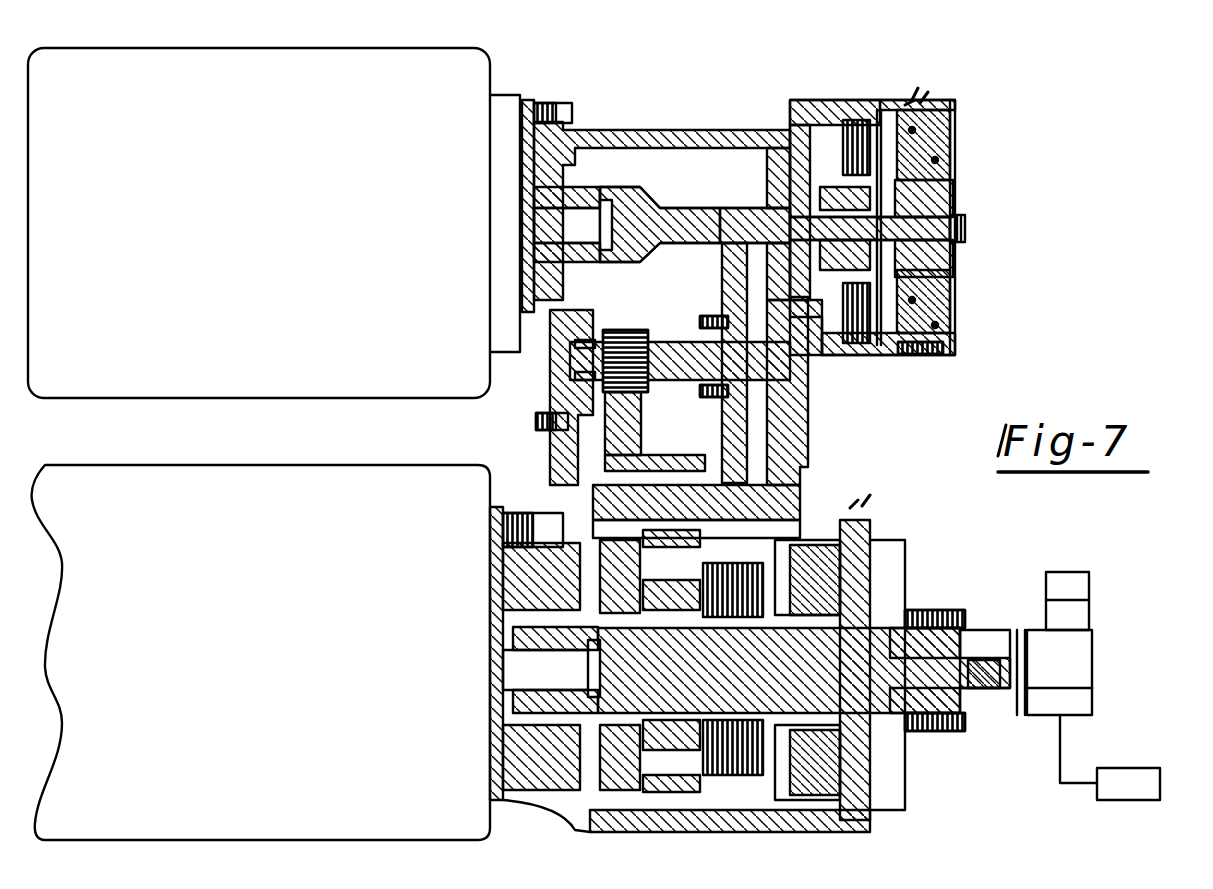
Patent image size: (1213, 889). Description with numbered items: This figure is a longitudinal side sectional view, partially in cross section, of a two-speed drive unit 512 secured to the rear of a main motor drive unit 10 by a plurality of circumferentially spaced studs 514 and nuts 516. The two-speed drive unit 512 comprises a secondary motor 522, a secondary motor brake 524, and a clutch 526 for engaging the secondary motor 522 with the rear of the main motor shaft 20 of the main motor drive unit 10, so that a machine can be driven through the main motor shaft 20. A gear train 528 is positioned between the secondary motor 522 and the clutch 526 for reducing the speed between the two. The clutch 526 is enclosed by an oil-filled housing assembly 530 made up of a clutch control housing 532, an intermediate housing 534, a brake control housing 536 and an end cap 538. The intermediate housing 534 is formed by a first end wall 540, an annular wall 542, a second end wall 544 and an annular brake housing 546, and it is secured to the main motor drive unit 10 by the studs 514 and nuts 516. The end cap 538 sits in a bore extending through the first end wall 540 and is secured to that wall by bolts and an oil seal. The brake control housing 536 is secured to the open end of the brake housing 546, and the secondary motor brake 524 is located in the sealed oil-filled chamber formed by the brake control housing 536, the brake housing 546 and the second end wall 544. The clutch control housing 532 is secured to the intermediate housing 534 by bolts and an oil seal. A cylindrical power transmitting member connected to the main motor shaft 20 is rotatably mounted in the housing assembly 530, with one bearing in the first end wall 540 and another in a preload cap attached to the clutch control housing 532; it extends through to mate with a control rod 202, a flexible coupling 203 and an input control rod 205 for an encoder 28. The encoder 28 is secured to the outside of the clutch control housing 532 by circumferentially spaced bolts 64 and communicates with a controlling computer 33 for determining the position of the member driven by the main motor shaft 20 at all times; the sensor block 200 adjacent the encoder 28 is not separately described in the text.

The main motor drive unit 10 is at (280, 683).
The main motor shaft 20 is at (518, 668).
The encoder 28 is at (1075, 672).
The controlling computer 33 is at (1124, 768).
The bolts 64 is at (1005, 612).
The sensor housing 200 is at (973, 615).
The control rod 202 is at (985, 690).
The flexible coupling 203 is at (1020, 630).
The input control rod 205 is at (1085, 688).
The two-speed drive unit 512 is at (850, 55).
The studs 514 is at (510, 530).
The nuts 516 is at (540, 515).
The secondary motor 522 is at (245, 245).
The secondary motor brake 524 is at (990, 75).
The clutch 526 is at (800, 570).
The gear train 528 is at (812, 400).
The housing assembly 530 is at (610, 130).
The clutch control housing 532 is at (915, 580).
The intermediate housing 534 is at (716, 828).
The brake control housing 536 is at (965, 300).
The end cap 538 is at (545, 402).
The first end wall 540 is at (560, 805).
The annular wall 542 is at (765, 105).
The second end wall 544 is at (798, 458).
The annular brake housing 546 is at (905, 358).